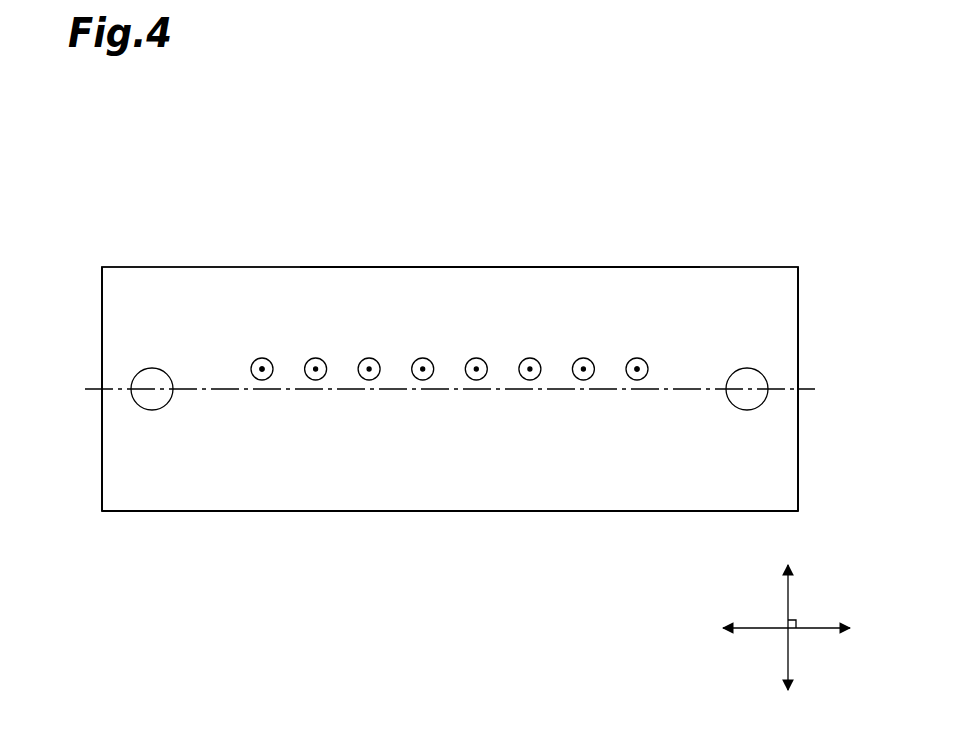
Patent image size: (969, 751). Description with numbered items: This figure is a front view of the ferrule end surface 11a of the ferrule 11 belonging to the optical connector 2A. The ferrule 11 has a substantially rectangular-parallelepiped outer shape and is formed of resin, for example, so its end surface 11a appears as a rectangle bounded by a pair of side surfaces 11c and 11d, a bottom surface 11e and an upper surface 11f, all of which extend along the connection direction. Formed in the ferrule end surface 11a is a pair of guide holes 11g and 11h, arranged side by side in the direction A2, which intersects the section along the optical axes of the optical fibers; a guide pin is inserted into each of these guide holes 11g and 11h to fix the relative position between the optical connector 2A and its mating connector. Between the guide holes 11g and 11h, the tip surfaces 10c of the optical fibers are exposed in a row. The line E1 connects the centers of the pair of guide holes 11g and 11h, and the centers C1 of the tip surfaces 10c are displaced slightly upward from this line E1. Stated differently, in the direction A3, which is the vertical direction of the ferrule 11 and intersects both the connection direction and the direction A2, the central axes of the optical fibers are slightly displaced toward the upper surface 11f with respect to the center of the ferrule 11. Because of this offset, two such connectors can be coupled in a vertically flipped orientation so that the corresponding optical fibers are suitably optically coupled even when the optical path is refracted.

The optical connector 2A is at (733, 170).
The ferrule 11 is at (750, 265).
The ferrule end surface 11a is at (616, 280).
The side surface 11c is at (101, 448).
The side surface 11d is at (799, 447).
The bottom surface 11e is at (462, 512).
The upper surface 11f is at (447, 267).
The guide hole 11g is at (152, 403).
The guide hole 11h is at (748, 403).
The tip surface 10c is at (267, 380).
The center C1 is at (262, 358).
The line E1 is at (697, 389).
The direction A2 is at (752, 632).
The direction A3 is at (790, 587).